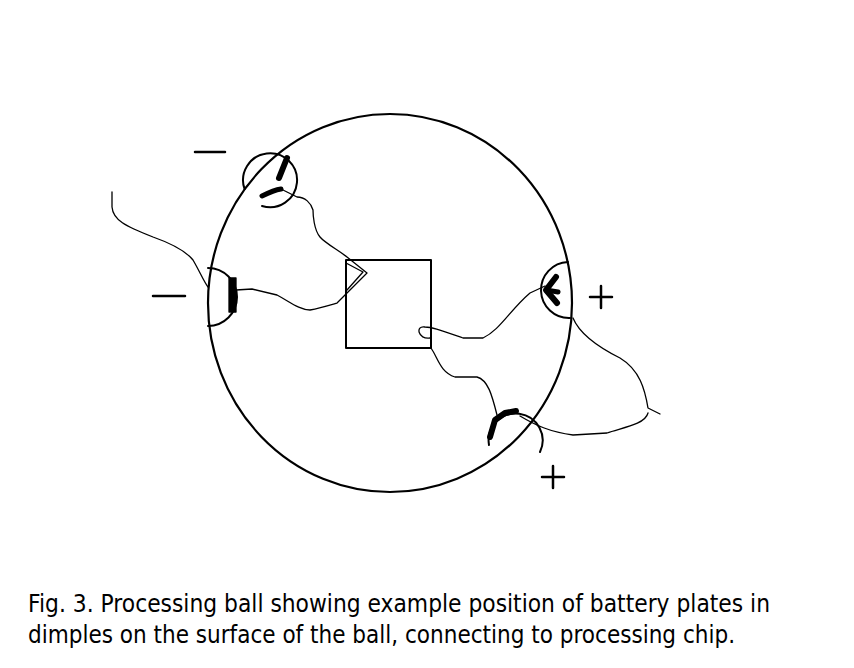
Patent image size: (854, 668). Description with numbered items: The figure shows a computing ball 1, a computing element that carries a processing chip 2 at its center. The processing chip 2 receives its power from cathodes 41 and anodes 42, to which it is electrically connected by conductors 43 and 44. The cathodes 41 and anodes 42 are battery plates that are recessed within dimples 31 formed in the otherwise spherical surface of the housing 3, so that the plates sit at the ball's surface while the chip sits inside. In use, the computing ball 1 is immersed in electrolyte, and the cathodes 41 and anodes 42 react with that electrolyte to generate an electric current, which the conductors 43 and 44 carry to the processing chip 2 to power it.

The computing ball 1 is at (433, 117).
The processing chip 2 is at (417, 283).
The housing 3 is at (320, 404).
The dimples 31 is at (242, 185).
The cathodes 41 is at (553, 283).
The anodes 42 is at (277, 185).
The conductors 43 is at (480, 340).
The conductors 44 is at (277, 298).